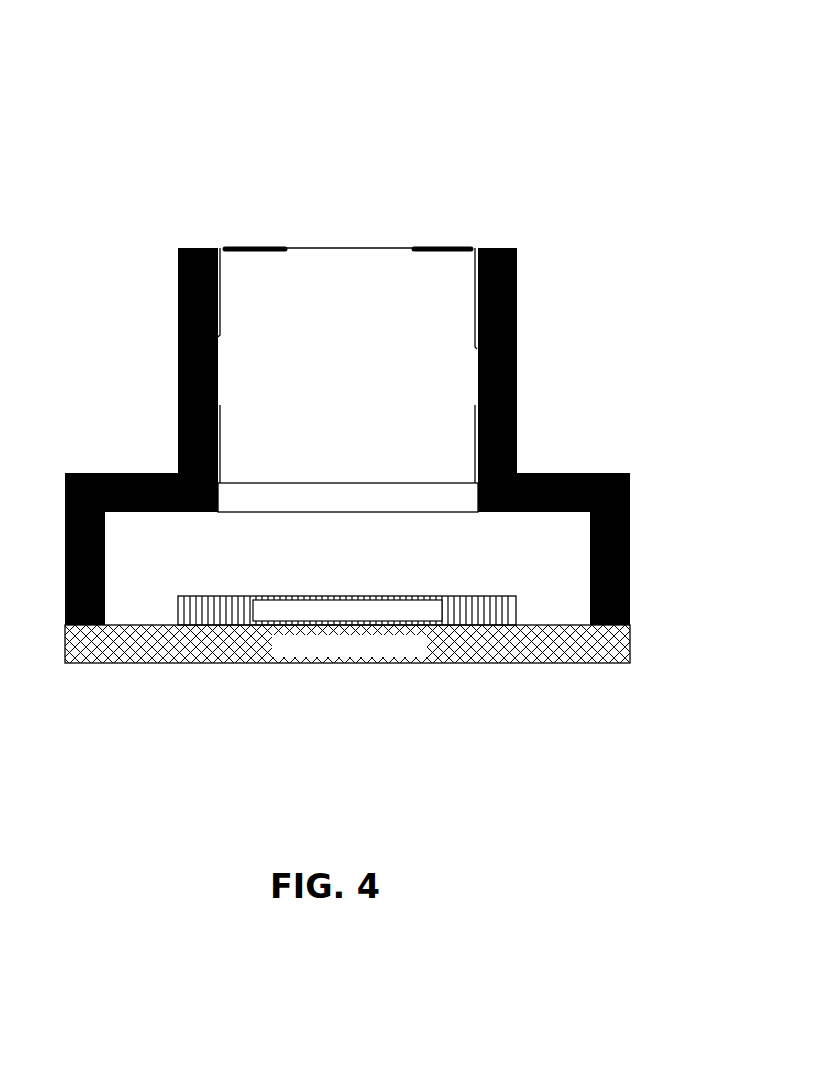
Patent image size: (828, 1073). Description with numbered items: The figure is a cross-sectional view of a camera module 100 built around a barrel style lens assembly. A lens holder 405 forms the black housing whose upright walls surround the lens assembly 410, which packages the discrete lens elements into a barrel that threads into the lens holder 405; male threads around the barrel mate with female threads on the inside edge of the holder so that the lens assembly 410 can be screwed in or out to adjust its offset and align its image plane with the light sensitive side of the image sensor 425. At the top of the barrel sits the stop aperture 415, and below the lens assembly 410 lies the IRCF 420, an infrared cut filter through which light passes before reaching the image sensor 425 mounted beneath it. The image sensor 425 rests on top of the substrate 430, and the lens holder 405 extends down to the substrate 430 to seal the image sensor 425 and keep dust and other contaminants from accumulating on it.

The camera module 100 is at (577, 75).
The lens holder 405 is at (517, 318).
The lens assembly 410 is at (363, 409).
The stop aperture 415 is at (270, 247).
The IRCF 420 is at (390, 507).
The image sensor 425 is at (438, 620).
The substrate 430 is at (422, 653).